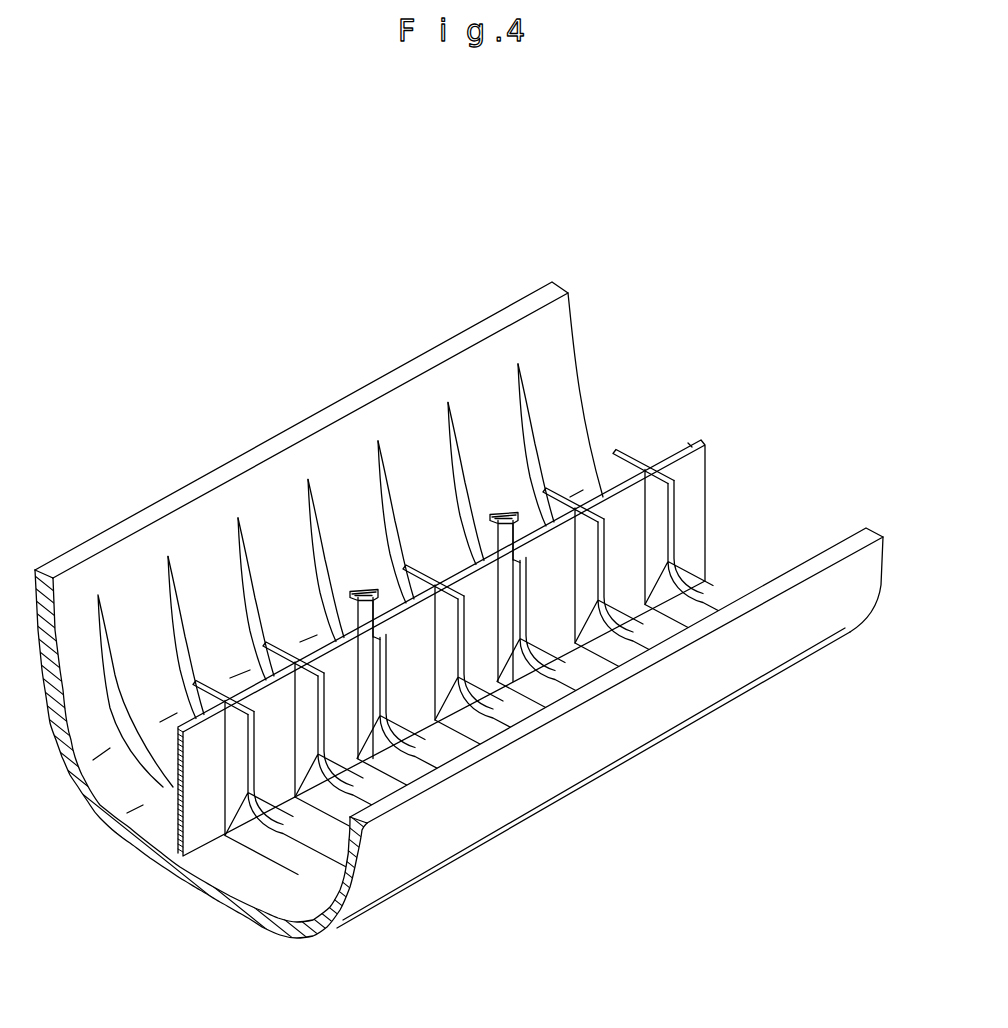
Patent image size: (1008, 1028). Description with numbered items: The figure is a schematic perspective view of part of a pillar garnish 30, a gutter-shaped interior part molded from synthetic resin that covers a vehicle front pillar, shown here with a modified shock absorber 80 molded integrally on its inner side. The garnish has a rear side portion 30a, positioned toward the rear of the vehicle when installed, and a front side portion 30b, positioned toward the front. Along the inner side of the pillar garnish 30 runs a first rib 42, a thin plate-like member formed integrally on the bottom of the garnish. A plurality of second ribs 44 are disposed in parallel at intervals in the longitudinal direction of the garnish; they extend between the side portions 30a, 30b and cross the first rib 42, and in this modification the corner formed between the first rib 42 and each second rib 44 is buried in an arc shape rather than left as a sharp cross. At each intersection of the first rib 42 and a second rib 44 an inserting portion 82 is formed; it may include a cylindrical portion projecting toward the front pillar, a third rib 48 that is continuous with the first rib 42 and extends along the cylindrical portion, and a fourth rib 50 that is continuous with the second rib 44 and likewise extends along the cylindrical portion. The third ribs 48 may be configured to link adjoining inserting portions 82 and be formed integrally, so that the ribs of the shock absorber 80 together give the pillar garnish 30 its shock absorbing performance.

The pillar garnish 30 is at (468, 866).
The rear side portion 30a is at (653, 700).
The front side portion 30b is at (327, 410).
The first rib 42 is at (692, 492).
The second ribs 44 is at (447, 403).
The third rib 48 is at (512, 503).
The fourth rib 50 is at (517, 520).
The shock absorber 80 is at (686, 443).
The inserting portion 82 is at (493, 514).